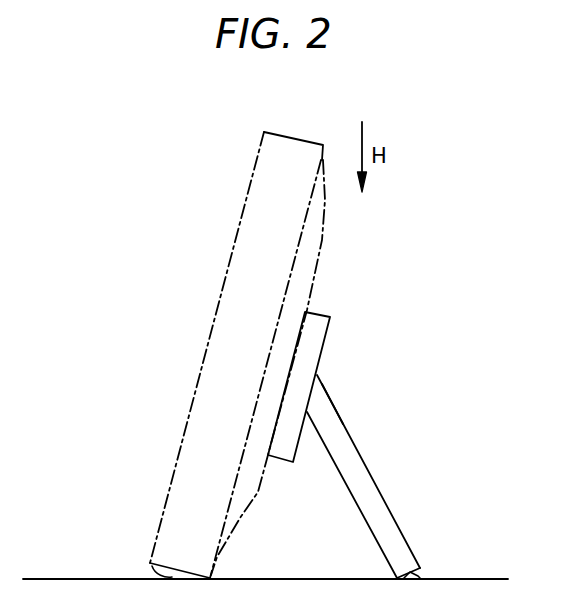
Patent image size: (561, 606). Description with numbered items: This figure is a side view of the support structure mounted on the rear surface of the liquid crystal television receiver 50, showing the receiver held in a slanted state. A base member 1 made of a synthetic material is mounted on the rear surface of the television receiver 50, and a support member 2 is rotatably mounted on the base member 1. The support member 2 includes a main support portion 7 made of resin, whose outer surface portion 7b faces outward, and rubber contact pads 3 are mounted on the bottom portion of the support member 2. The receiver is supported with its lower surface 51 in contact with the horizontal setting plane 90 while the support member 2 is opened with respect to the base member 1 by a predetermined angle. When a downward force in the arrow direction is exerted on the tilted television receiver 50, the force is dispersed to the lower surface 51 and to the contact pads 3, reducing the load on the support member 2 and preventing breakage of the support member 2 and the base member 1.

The base member 1 is at (310, 343).
The support member 2 is at (392, 476).
The contact pads 3 is at (420, 578).
The main support portion 7 is at (352, 465).
The outer surface portion 7b is at (343, 418).
The liquid crystal television receiver 50 is at (213, 328).
The lower surface 51 is at (148, 573).
The setting plane 90 is at (45, 578).